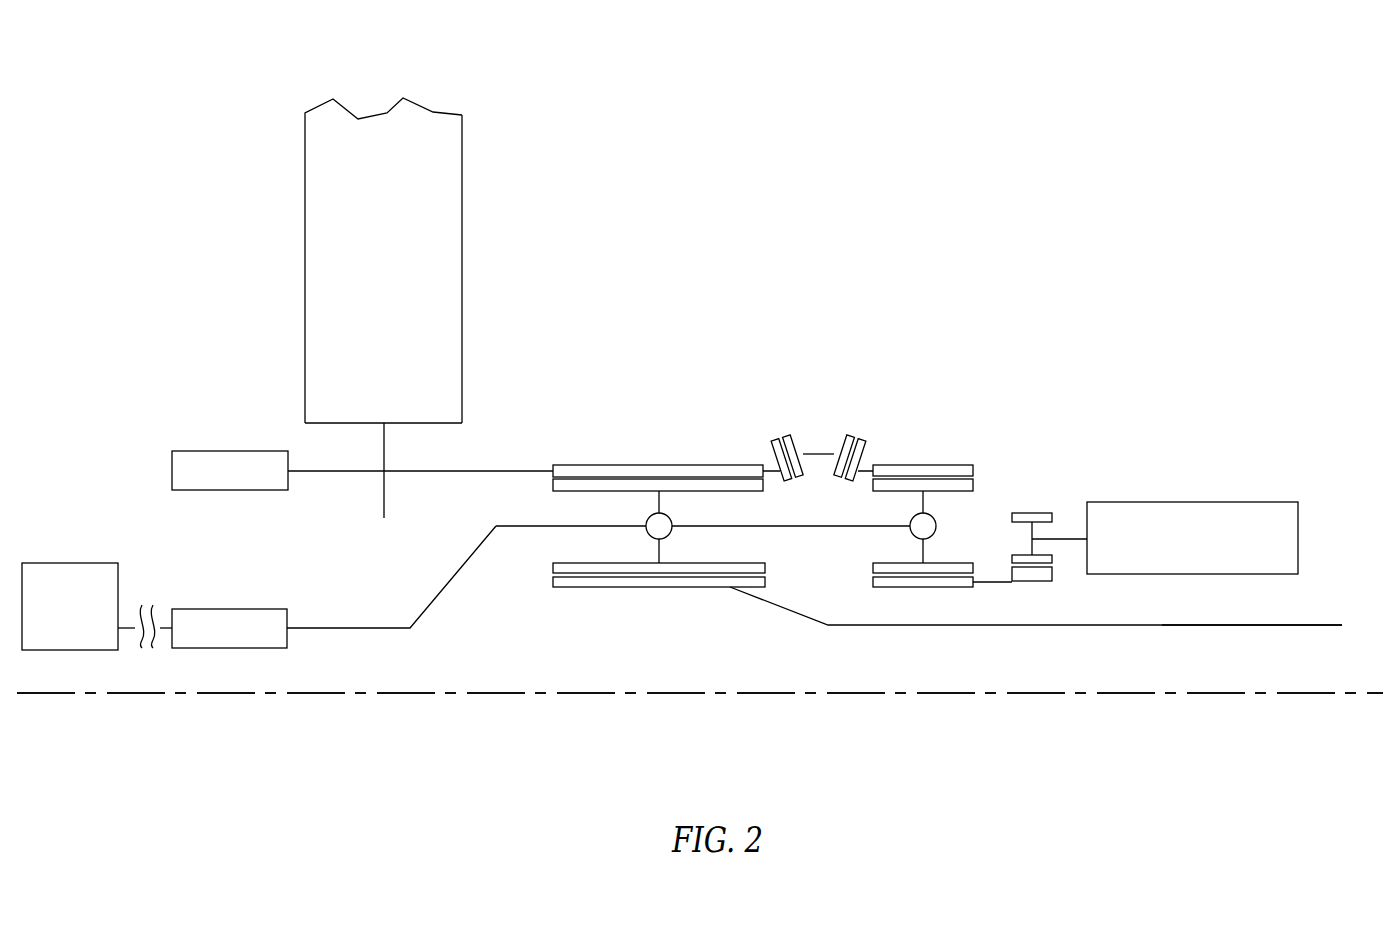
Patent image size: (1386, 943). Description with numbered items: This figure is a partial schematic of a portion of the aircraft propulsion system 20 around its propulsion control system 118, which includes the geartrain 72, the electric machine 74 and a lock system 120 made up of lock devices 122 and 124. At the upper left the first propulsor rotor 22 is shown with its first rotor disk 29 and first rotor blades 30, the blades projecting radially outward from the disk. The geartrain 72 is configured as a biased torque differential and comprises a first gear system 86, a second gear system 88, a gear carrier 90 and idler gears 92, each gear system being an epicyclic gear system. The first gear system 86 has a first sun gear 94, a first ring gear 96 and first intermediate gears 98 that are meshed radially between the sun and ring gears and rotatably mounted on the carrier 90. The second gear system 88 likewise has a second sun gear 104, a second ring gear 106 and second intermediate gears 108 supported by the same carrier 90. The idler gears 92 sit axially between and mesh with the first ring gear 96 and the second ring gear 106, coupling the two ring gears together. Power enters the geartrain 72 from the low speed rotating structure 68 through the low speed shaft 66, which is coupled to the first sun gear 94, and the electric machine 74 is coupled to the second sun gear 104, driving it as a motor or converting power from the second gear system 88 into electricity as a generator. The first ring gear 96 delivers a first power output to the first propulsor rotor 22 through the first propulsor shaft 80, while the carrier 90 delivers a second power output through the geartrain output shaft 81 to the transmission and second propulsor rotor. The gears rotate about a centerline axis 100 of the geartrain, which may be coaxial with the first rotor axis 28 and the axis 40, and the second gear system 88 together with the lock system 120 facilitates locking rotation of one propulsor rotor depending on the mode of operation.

The aircraft propulsion system 20 is at (1047, 152).
The first propulsor rotor 22 is at (425, 221).
The first rotor blades 30 is at (463, 192).
The first rotor disk 29 is at (385, 440).
The first propulsor shaft 80 is at (445, 471).
The lock device 122 is at (205, 450).
The lock device 124 is at (262, 607).
The geartrain output shaft 81 is at (392, 628).
The gear carrier 90 is at (538, 533).
The propulsion control system 118 is at (662, 455).
The first gear system 86 is at (658, 425).
The first ring gear 96 is at (715, 462).
The first sun gear 94 is at (662, 588).
The first intermediate gears 98 is at (663, 500).
The geartrain 72 is at (903, 474).
The idler gears 92 is at (818, 450).
The second gear system 88 is at (941, 416).
The second ring gear 106 is at (965, 462).
The second sun gear 104 is at (923, 588).
The second intermediate gears 108 is at (930, 505).
The low speed shaft 66 is at (1162, 625).
The low speed rotating structure 68 is at (1242, 626).
The electric machine 74 is at (1298, 539).
The lock system 120 is at (228, 674).
The first rotor axis 28 is at (701, 739).
The axis 40 is at (701, 739).
The centerline axis 100 is at (1353, 693).